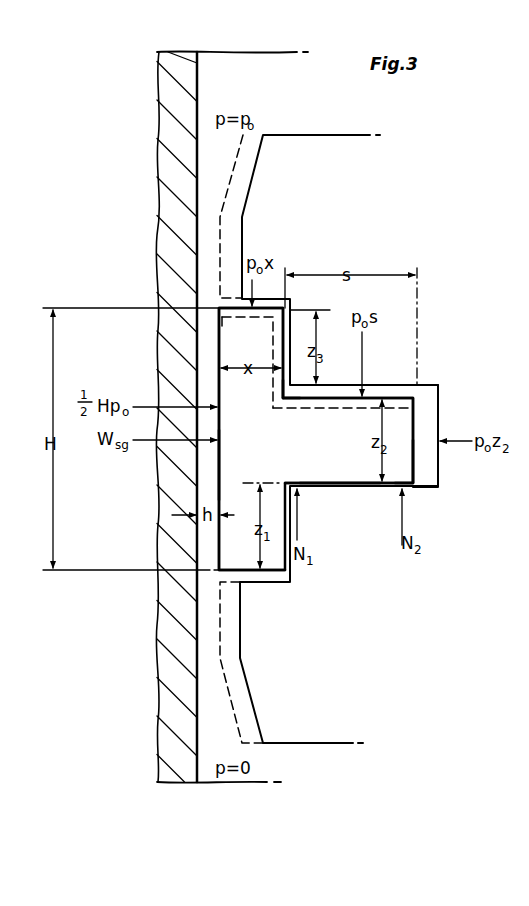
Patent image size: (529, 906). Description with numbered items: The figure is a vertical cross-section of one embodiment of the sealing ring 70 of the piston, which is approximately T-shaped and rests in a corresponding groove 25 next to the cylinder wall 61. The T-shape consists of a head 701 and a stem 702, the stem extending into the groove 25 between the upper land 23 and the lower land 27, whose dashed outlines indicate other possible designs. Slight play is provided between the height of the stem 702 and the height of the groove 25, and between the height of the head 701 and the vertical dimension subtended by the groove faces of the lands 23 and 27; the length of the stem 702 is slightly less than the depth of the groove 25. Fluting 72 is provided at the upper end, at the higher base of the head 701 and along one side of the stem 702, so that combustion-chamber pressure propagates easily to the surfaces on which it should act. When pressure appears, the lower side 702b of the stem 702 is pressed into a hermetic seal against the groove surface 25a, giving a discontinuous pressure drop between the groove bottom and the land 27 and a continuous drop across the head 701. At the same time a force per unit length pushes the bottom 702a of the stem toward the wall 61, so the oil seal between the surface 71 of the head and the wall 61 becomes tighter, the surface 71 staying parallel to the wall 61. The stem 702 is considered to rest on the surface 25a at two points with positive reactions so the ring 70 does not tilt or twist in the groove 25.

The wall 61 is at (198, 100).
The land 23 is at (338, 205).
The land 27 is at (326, 657).
The groove 25 is at (425, 413).
The groove surface 25a is at (333, 486).
The sealing ring 70 is at (357, 439).
The head 701 is at (259, 347).
The stem 702 is at (344, 432).
The bottom of the stem 702a is at (418, 474).
The lower side of stem 702b is at (333, 483).
The surface of the head 71 is at (220, 468).
The fluting 72 is at (284, 398).